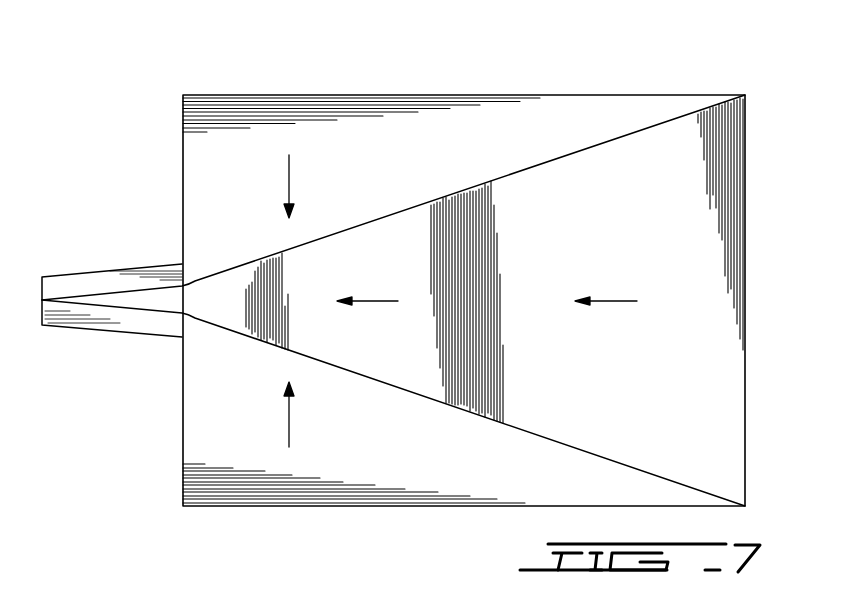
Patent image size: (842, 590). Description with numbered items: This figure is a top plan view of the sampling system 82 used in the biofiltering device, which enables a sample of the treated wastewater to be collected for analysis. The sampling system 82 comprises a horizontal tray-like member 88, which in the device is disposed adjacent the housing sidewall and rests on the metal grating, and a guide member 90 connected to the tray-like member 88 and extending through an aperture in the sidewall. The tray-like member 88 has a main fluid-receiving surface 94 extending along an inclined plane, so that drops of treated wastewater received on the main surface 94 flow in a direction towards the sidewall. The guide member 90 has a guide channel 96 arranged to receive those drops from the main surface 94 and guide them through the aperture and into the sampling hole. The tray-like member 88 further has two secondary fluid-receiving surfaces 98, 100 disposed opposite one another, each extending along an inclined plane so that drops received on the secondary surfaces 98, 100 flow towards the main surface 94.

The sampling system 82 is at (643, 96).
The tray-like member 88 is at (698, 277).
The guide member 90 is at (100, 285).
The main fluid-receiving surface 94 is at (627, 377).
The guide channel 96 is at (127, 301).
The secondary fluid-receiving surface 98 is at (398, 179).
The secondary fluid-receiving surface 100 is at (400, 444).